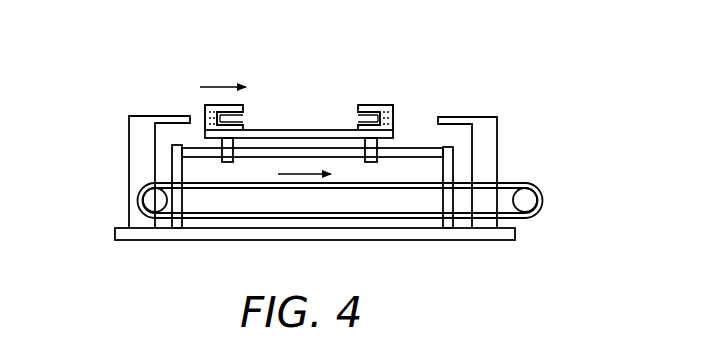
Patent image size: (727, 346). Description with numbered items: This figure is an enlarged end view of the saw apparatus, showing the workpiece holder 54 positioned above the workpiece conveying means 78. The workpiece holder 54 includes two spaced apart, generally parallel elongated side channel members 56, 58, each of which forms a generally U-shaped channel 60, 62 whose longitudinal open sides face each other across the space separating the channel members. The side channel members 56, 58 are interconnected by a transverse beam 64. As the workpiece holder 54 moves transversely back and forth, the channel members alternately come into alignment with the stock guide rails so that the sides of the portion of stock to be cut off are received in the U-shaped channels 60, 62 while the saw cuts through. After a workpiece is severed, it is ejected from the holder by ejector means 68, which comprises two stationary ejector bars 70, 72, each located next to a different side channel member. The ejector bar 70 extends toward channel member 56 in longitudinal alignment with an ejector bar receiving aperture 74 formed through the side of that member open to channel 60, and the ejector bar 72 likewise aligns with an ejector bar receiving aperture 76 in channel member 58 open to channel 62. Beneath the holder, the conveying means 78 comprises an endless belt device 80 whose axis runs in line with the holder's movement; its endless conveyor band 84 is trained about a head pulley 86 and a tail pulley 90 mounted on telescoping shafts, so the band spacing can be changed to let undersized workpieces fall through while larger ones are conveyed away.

The workpiece holder 54 is at (408, 64).
The side channel member 56 is at (213, 105).
The side channel member 58 is at (373, 105).
The U-shaped channel 60 is at (243, 117).
The U-shaped channel 62 is at (358, 108).
The transverse beam 64 is at (297, 130).
The ejector means 68 is at (106, 71).
The stationary ejector bar 70 is at (155, 116).
The stationary ejector bar 72 is at (467, 117).
The ejector bar receiving aperture 74 is at (203, 115).
The ejector bar receiving aperture 76 is at (395, 118).
The workpiece conveying means 78 is at (516, 147).
The endless belt device 80 is at (333, 198).
The endless conveyor band 84 is at (511, 182).
The head pulley 86 is at (528, 202).
The tail pulley 90 is at (150, 200).